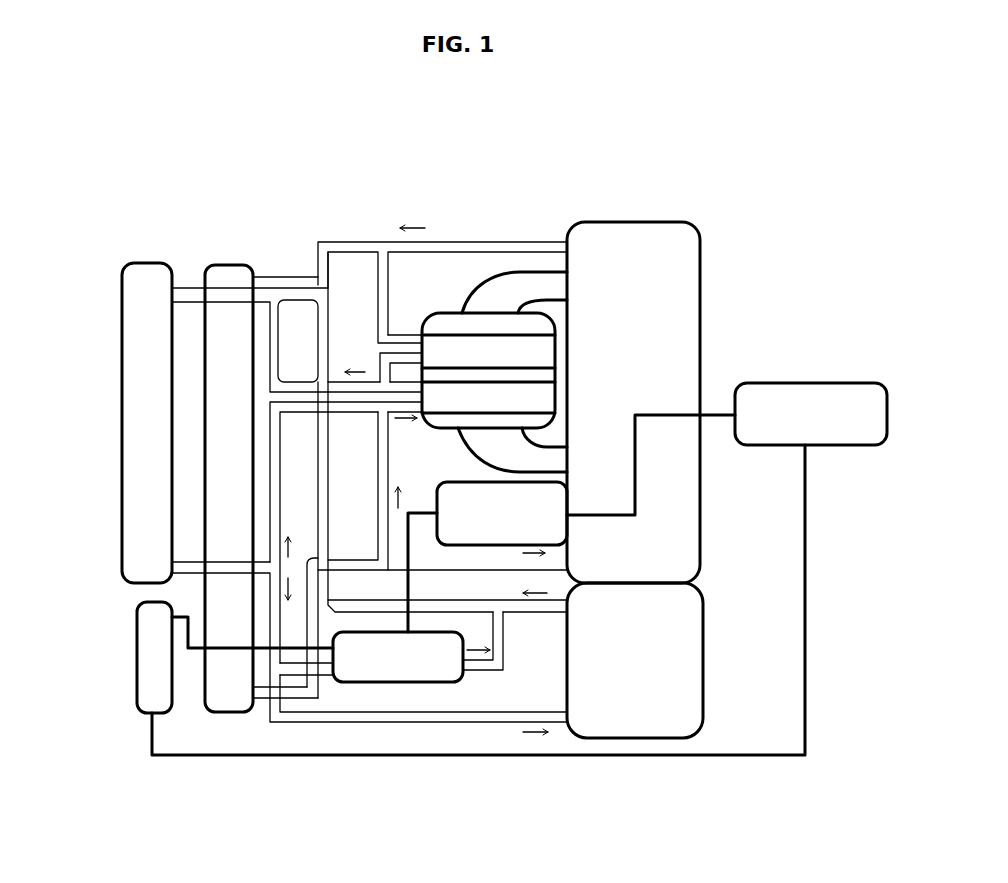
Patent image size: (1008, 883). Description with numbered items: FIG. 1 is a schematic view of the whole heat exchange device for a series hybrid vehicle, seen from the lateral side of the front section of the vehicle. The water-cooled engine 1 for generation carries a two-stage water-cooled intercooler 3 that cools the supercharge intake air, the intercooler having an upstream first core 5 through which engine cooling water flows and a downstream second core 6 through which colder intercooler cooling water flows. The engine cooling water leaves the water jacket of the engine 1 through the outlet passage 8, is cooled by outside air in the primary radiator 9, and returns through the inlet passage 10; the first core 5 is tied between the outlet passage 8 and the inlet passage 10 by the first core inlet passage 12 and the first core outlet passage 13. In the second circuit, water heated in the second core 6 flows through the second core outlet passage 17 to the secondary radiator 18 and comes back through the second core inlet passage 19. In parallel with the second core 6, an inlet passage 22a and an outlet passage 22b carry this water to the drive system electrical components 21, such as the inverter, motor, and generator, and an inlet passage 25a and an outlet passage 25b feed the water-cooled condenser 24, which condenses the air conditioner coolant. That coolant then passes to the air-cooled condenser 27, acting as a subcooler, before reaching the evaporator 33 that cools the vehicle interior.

The engine 1 is at (667, 219).
The water-cooled intercooler 3 is at (430, 315).
The first core 5 is at (452, 330).
The second core 6 is at (445, 417).
The outlet passage 8 is at (448, 240).
The primary radiator 9 is at (223, 262).
The inlet passage 10 is at (347, 560).
The first core inlet passage 12 is at (378, 287).
The first core outlet passage 13 is at (378, 445).
The second core outlet passage 17 is at (300, 380).
The secondary radiator 18 is at (118, 379).
The second core inlet passage 19 is at (365, 412).
The drive system electrical components 21 is at (703, 680).
The inlet passage 22a is at (533, 707).
The outlet passage 22b is at (513, 613).
The water-cooled condenser 24 is at (400, 682).
The inlet passage 25a is at (323, 675).
The outlet passage 25b is at (472, 673).
The air-cooled condenser 27 is at (137, 658).
The evaporator 33 is at (825, 383).